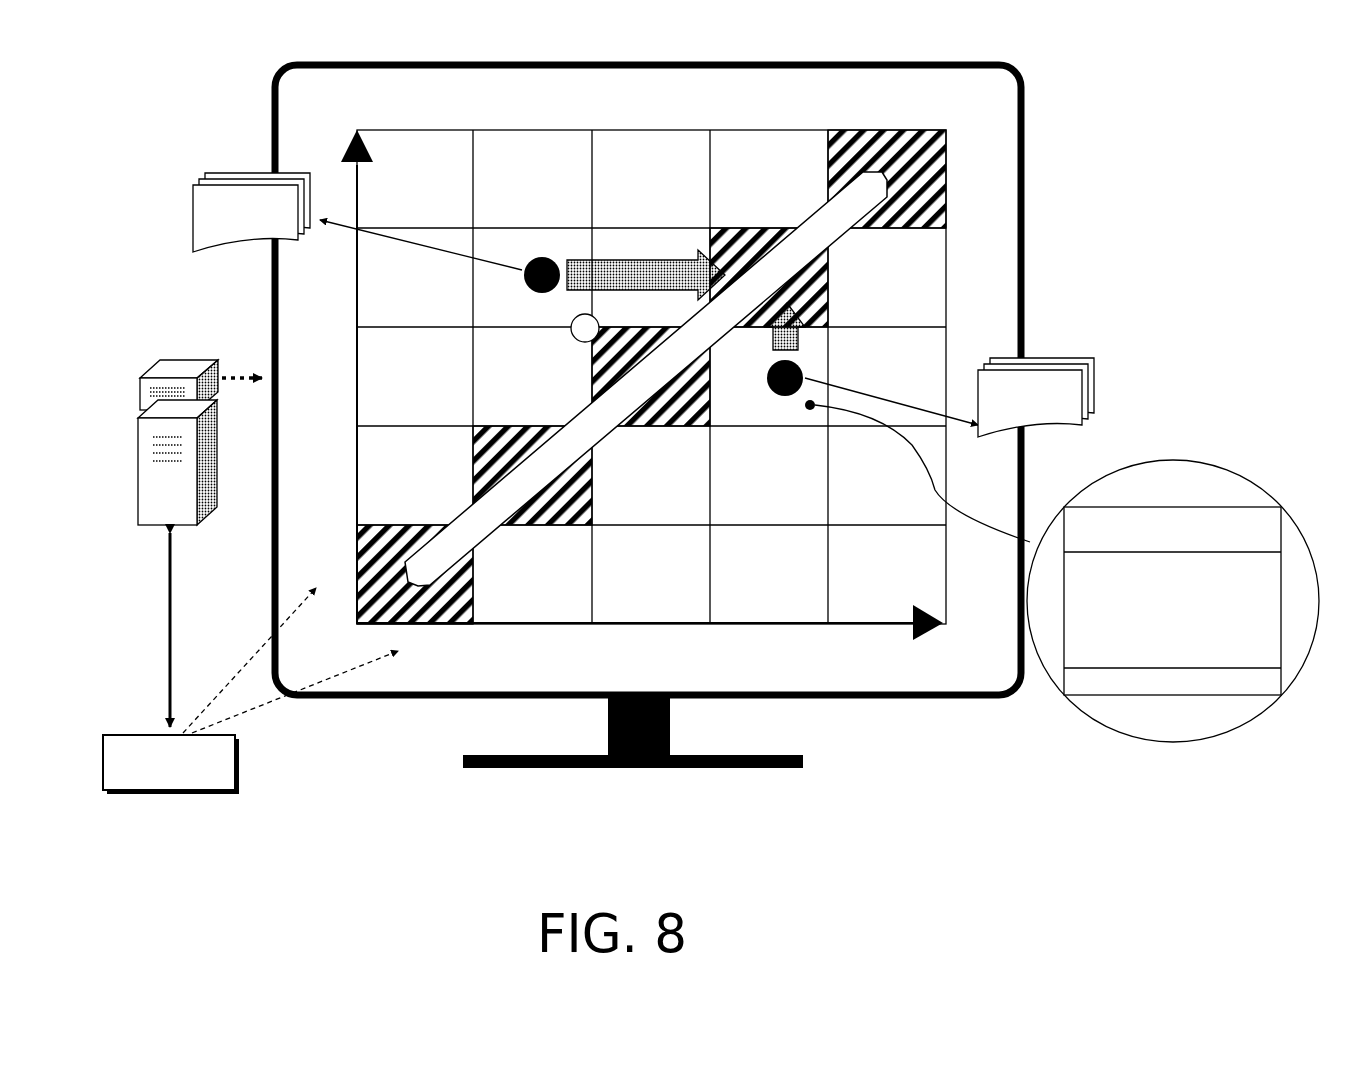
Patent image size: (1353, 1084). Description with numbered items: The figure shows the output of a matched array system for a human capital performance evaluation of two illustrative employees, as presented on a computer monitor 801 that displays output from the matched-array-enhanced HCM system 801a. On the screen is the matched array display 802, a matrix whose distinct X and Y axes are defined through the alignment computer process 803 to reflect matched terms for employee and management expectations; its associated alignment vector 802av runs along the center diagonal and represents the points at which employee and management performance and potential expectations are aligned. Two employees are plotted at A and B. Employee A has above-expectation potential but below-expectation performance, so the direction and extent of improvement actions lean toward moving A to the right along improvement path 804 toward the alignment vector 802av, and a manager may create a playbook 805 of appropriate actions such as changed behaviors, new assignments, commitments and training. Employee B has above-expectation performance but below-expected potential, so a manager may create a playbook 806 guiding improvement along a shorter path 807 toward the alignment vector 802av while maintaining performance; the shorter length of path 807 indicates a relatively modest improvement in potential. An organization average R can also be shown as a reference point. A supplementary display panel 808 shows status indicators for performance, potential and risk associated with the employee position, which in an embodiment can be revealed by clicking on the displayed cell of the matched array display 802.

The computer monitor 801 is at (300, 65).
The matched-array-enhanced HCM system 801a is at (218, 392).
The matched array display 802 is at (430, 130).
The alignment vector 802av is at (822, 228).
The alignment computer process 803 is at (138, 735).
The improvement path 804 is at (645, 258).
The playbook 805 is at (222, 253).
The playbook 806 is at (1098, 392).
The improvement path 807 is at (803, 335).
The supplementary display panel 808 is at (1172, 460).